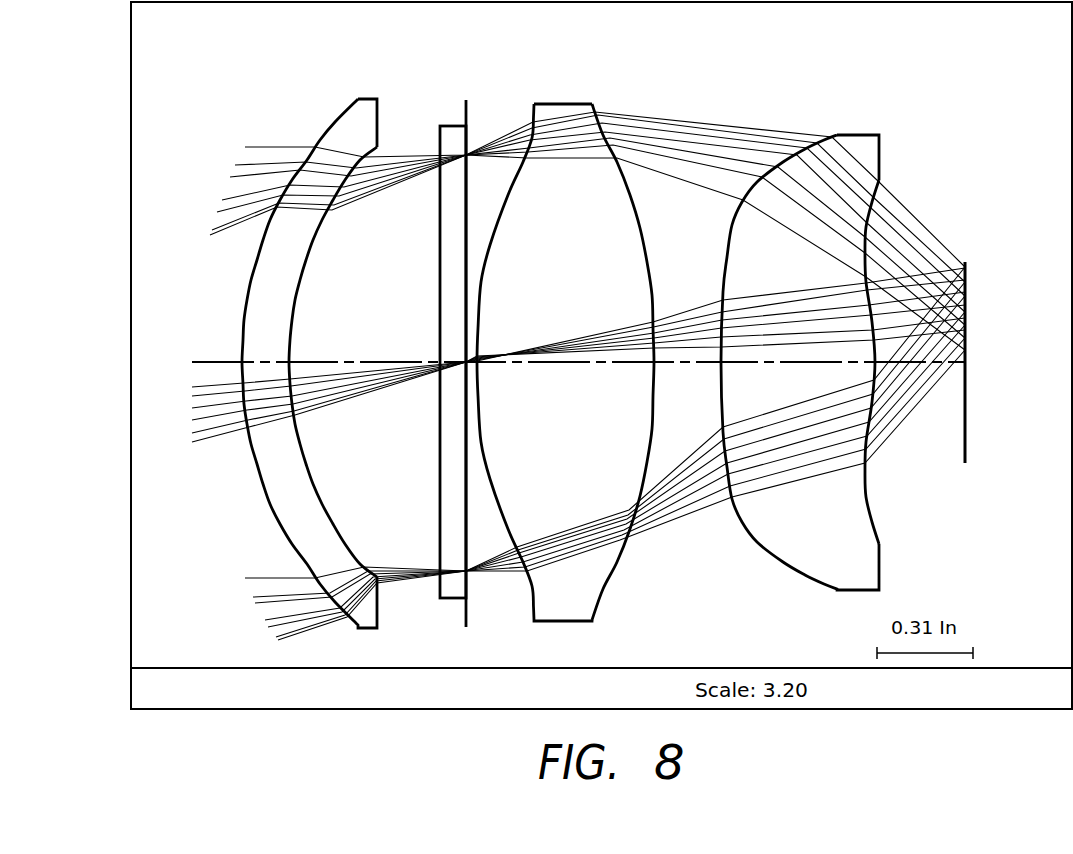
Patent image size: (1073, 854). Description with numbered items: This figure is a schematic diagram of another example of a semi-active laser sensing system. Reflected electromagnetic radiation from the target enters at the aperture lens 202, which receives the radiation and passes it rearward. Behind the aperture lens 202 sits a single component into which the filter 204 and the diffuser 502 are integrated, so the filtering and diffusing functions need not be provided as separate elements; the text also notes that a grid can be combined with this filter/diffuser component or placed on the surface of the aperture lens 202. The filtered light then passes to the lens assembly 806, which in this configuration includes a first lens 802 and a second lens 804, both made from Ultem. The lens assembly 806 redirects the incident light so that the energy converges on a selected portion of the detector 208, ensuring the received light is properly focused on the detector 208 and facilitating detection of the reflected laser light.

The aperture lens 202 is at (335, 118).
The filter 204 is at (448, 125).
The diffuser 502 is at (466, 617).
The lens assembly 806 is at (882, 107).
The first lens 802 is at (600, 607).
The second lens 804 is at (880, 572).
The detector 208 is at (967, 408).